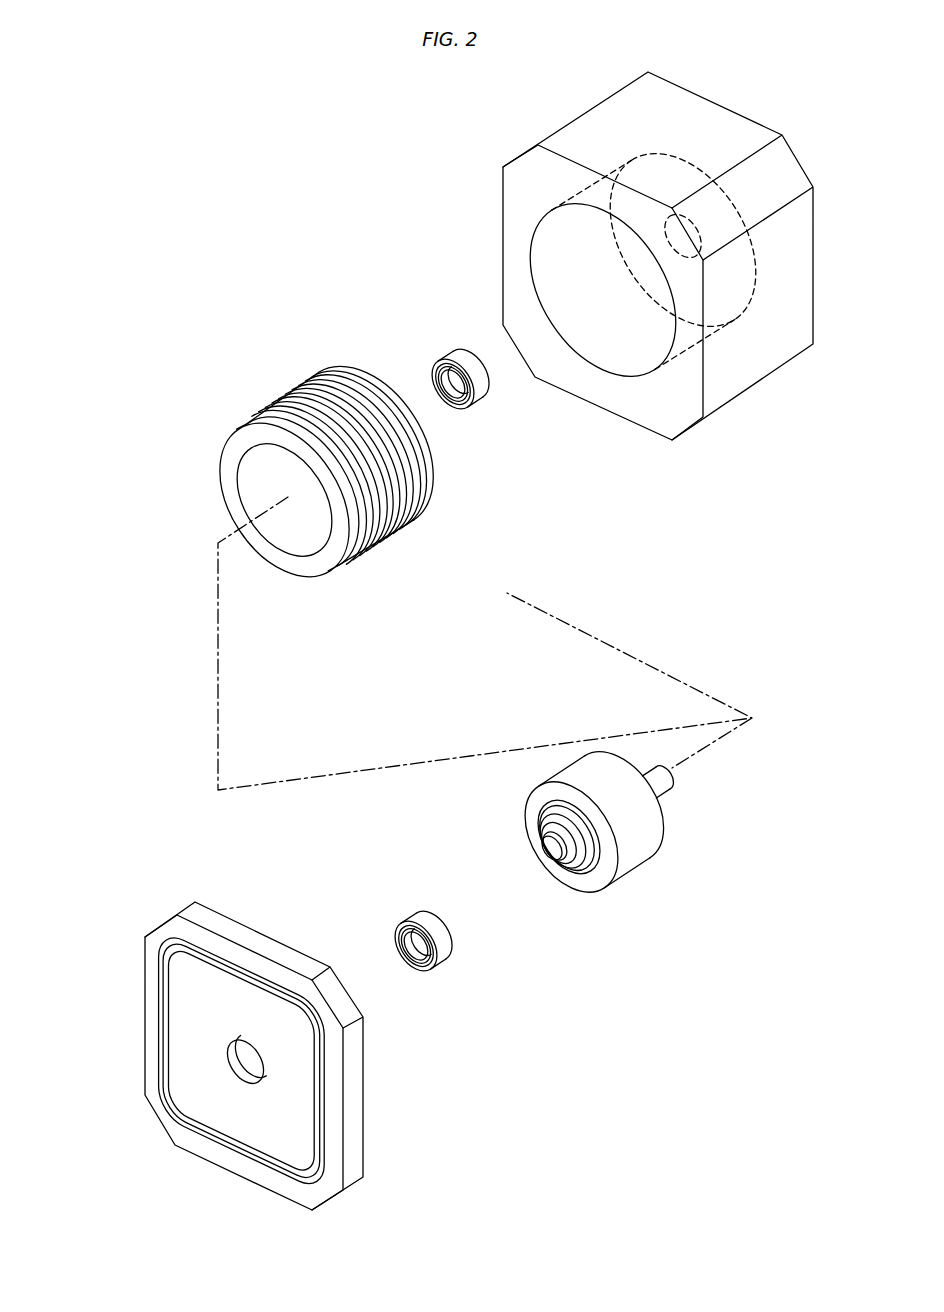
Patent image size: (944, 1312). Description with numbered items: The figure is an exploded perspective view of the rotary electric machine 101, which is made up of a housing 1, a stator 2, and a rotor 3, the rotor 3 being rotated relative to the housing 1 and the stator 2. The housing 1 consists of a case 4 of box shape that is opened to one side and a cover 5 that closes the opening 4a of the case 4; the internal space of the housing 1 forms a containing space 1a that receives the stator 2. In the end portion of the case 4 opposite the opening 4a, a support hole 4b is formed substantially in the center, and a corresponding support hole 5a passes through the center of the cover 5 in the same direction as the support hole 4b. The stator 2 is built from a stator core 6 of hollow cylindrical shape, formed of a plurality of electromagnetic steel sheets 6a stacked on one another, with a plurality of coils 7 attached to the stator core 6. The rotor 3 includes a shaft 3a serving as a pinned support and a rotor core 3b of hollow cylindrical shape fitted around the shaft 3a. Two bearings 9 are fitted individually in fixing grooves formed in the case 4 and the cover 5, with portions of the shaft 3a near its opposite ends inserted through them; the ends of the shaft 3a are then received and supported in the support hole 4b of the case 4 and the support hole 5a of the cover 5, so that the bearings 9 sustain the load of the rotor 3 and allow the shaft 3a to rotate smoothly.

The rotary electric machine 101 is at (100, 170).
The housing 1 is at (160, 280).
The containing space 1a is at (610, 356).
The stator 2 is at (297, 390).
The rotor 3 is at (583, 772).
The shaft 3a is at (552, 853).
The rotor core 3b is at (640, 850).
The case 4 is at (510, 190).
The opening 4a is at (570, 326).
The support hole 4b is at (706, 232).
The cover 5 is at (145, 937).
The support hole 5a is at (240, 1067).
The stator core 6 is at (398, 537).
The electromagnetic steel sheets 6a is at (402, 452).
The coils 7 is at (303, 568).
The bearings 9 is at (466, 366).